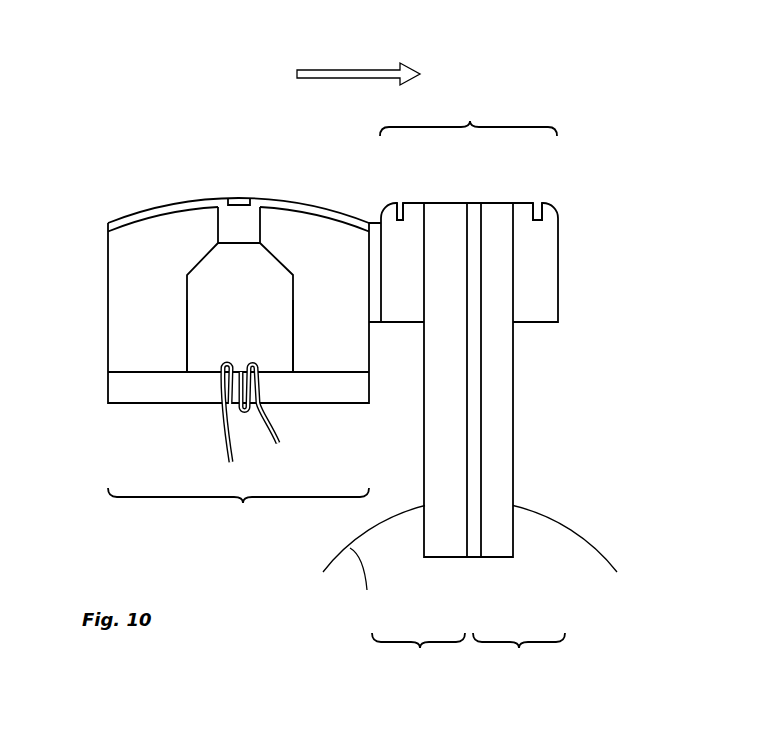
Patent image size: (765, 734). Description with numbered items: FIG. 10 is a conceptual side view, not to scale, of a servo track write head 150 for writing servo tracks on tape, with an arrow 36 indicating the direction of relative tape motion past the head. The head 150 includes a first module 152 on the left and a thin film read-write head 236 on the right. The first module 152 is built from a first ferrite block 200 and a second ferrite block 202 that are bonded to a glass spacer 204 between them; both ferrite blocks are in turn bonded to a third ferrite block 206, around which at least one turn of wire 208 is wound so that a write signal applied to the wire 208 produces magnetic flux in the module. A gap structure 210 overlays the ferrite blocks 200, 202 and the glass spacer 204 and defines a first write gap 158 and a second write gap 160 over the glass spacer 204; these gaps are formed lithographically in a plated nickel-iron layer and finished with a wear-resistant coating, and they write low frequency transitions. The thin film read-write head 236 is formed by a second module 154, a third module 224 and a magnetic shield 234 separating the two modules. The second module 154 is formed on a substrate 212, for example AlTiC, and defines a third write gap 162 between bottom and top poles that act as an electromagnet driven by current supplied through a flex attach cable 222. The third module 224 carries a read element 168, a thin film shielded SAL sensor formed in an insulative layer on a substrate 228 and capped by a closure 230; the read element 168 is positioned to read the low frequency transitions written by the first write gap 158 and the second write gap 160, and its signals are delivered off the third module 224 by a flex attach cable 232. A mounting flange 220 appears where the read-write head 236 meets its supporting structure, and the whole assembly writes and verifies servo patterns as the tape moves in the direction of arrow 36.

The direction arrow 36 is at (353, 68).
The servo track write head 150 is at (552, 72).
The first module 152 is at (238, 510).
The second module 154 is at (519, 655).
The first write gap 158 is at (226, 186).
The second write gap 160 is at (252, 184).
The third write gap 162 is at (509, 187).
The read element 168 is at (422, 187).
The first ferrite block 200 is at (108, 283).
The second ferrite block 202 is at (293, 324).
The glass spacer 204 is at (245, 243).
The third ferrite block 206 is at (297, 403).
The wire 208 is at (225, 449).
The gap structure 210 is at (135, 213).
The substrate 212 is at (497, 557).
The flange 220 is at (543, 322).
The flex attach cable 222 is at (565, 527).
The third module 224 is at (418, 655).
The substrate 228 is at (435, 557).
The closure 230 is at (403, 322).
The flex attach cable 232 is at (367, 583).
The magnetic shield 234 is at (473, 557).
The thin film read-write head 236 is at (469, 207).